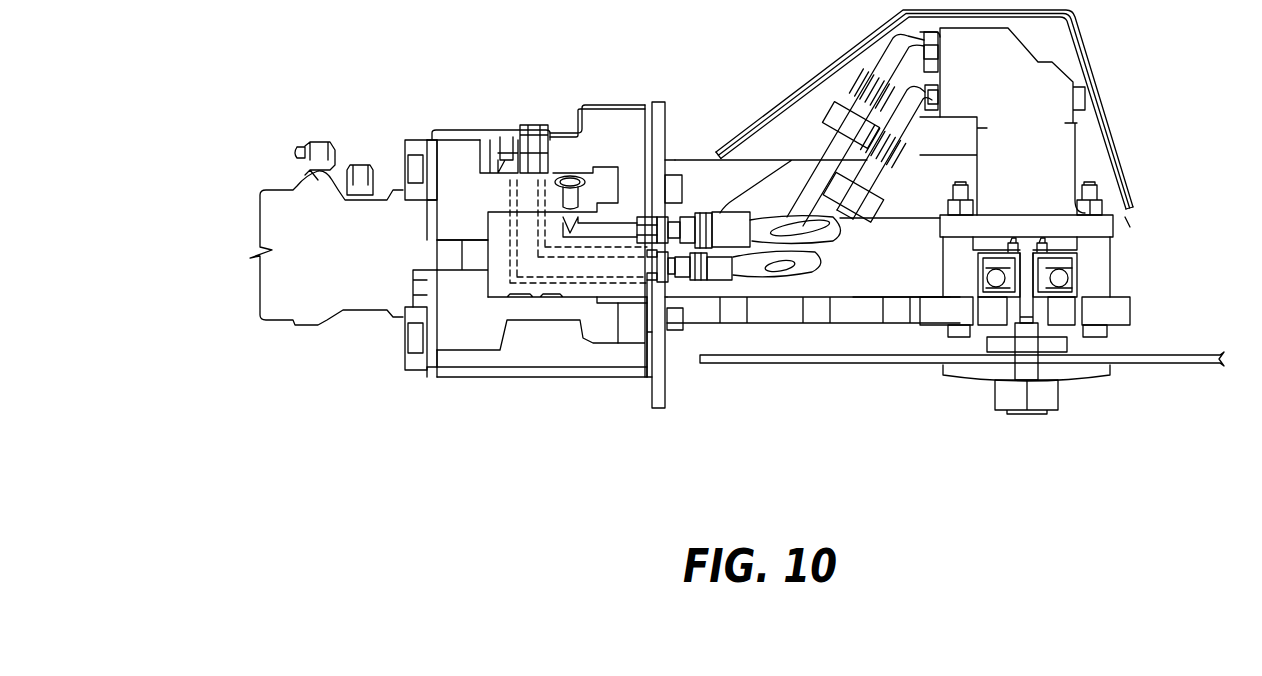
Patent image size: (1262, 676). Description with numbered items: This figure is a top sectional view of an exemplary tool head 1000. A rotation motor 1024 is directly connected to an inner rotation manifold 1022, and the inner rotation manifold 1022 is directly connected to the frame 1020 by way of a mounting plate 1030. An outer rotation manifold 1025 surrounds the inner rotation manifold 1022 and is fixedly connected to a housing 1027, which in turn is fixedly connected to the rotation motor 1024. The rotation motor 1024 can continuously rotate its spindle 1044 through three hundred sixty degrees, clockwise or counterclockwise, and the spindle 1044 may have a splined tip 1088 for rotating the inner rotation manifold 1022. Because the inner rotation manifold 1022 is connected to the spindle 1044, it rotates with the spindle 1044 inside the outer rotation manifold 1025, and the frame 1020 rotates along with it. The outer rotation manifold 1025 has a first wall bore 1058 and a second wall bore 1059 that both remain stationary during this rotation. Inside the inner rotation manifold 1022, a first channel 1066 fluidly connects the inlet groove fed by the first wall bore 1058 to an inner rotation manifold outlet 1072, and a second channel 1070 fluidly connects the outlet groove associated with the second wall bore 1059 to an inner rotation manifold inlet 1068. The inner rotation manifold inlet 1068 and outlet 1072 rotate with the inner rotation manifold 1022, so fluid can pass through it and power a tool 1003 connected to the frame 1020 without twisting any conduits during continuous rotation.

The tool head 1000 is at (512, 52).
The tool 1003 is at (1152, 358).
The frame 1020 is at (675, 163).
The inner rotation manifold 1022 is at (633, 317).
The rotation motor 1024 is at (307, 320).
The outer rotation manifold 1025 is at (482, 258).
The housing 1027 is at (565, 360).
The mounting plate 1030 is at (658, 397).
The spindle 1044 is at (445, 257).
The first wall bore 1058 is at (552, 160).
The second wall bore 1059 is at (520, 160).
The first channel 1066 is at (555, 255).
The inner rotation manifold inlet 1068 is at (655, 280).
The second channel 1070 is at (517, 277).
The inner rotation manifold outlet 1072 is at (660, 253).
The splined tip 1088 is at (478, 290).